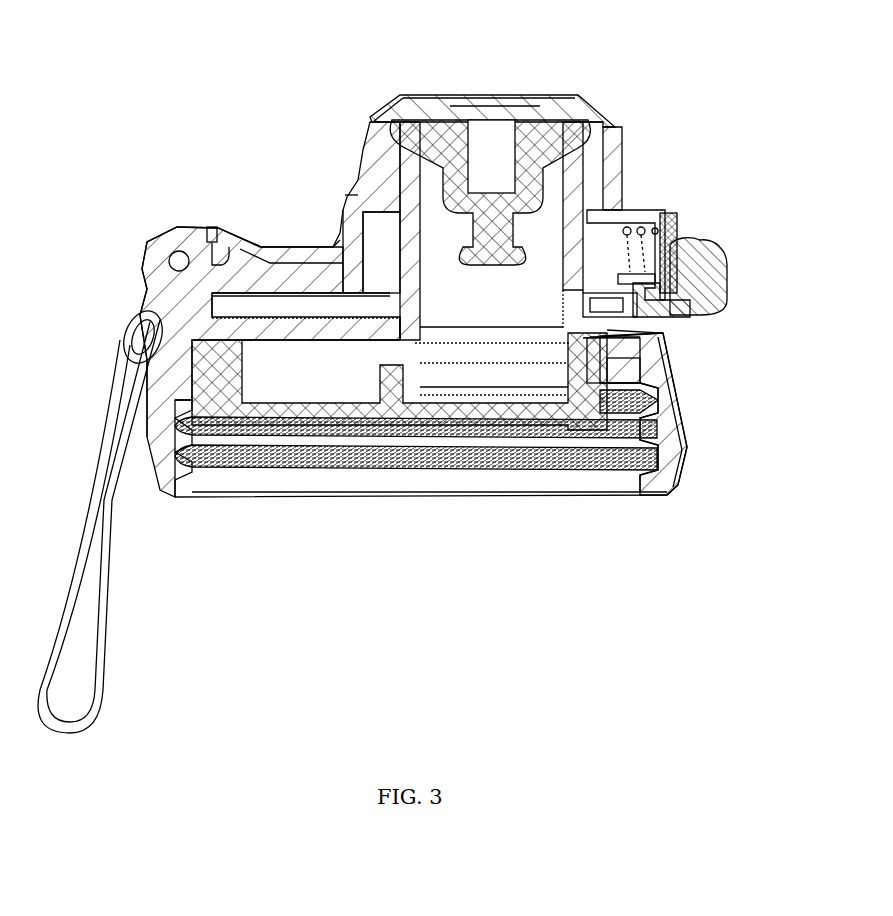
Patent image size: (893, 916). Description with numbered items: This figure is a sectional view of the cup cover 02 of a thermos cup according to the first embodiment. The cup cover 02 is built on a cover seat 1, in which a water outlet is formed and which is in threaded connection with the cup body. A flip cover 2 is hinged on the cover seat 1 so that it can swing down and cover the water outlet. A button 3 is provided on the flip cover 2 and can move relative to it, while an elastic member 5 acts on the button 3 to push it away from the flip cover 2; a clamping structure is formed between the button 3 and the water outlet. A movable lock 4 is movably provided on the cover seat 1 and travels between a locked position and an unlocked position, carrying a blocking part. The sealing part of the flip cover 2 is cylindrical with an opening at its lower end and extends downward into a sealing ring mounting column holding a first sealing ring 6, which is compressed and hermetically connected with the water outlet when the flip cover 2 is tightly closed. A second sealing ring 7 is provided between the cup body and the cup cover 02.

The cup cover 02 is at (203, 86).
The cover seat 1 is at (673, 393).
The flip cover 2 is at (618, 134).
The button 3 is at (668, 215).
The movable lock 4 is at (727, 288).
The elastic member 5 is at (690, 243).
The first sealing ring 6 is at (510, 120).
The second sealing ring 7 is at (600, 425).